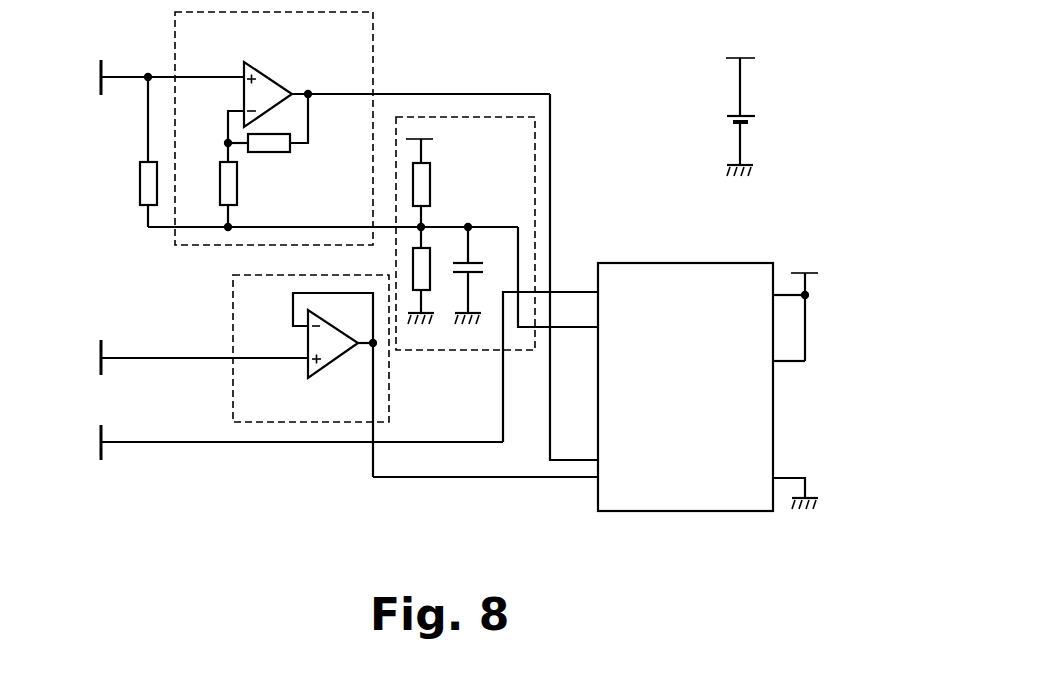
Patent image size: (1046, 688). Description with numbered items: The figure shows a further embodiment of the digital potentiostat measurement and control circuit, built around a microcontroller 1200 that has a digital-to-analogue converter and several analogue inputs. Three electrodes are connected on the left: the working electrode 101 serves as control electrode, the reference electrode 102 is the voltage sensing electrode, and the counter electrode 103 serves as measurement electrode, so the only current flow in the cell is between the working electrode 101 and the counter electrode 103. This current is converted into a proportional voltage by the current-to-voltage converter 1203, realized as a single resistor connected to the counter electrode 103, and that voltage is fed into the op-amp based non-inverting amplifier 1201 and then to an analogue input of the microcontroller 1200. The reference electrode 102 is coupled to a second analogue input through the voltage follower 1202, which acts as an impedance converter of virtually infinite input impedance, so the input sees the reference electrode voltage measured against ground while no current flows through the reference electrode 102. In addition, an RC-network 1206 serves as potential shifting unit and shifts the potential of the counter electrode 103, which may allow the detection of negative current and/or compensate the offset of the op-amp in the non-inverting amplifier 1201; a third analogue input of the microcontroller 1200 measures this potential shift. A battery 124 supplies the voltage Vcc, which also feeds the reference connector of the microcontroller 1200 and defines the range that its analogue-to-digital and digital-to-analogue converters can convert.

The working electrode 101 is at (82, 465).
The reference electrode 102 is at (74, 330).
The counter electrode 103 is at (85, 101).
The battery 124 is at (760, 87).
The microcontroller 1200 is at (712, 478).
The non-inverting amplifier 1201 is at (188, 55).
The voltage follower 1202 is at (270, 320).
The current-to-voltage converter 1203 is at (128, 190).
The RC-network 1206 is at (500, 134).